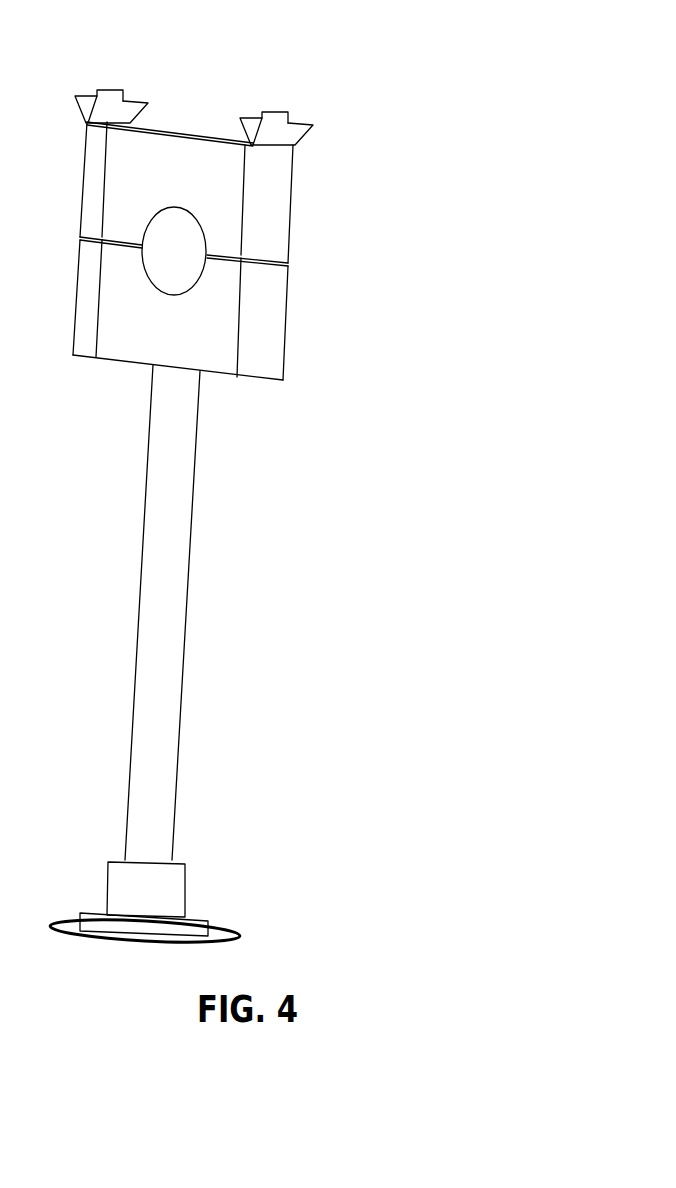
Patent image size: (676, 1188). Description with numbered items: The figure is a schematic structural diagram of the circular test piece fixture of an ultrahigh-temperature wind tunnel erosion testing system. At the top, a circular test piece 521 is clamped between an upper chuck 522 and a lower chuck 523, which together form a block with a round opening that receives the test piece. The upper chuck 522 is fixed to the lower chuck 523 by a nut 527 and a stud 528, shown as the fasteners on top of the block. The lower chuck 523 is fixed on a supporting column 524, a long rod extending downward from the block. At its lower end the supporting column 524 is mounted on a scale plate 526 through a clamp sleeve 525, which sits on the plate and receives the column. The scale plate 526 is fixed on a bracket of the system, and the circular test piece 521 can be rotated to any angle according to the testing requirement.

The circular test piece 521 is at (163, 222).
The upper chuck 522 is at (268, 217).
The lower chuck 523 is at (258, 333).
The supporting column 524 is at (165, 700).
The clamp sleeve 525 is at (173, 900).
The scale plate 526 is at (227, 922).
The nut 527 is at (290, 126).
The stud 528 is at (265, 112).